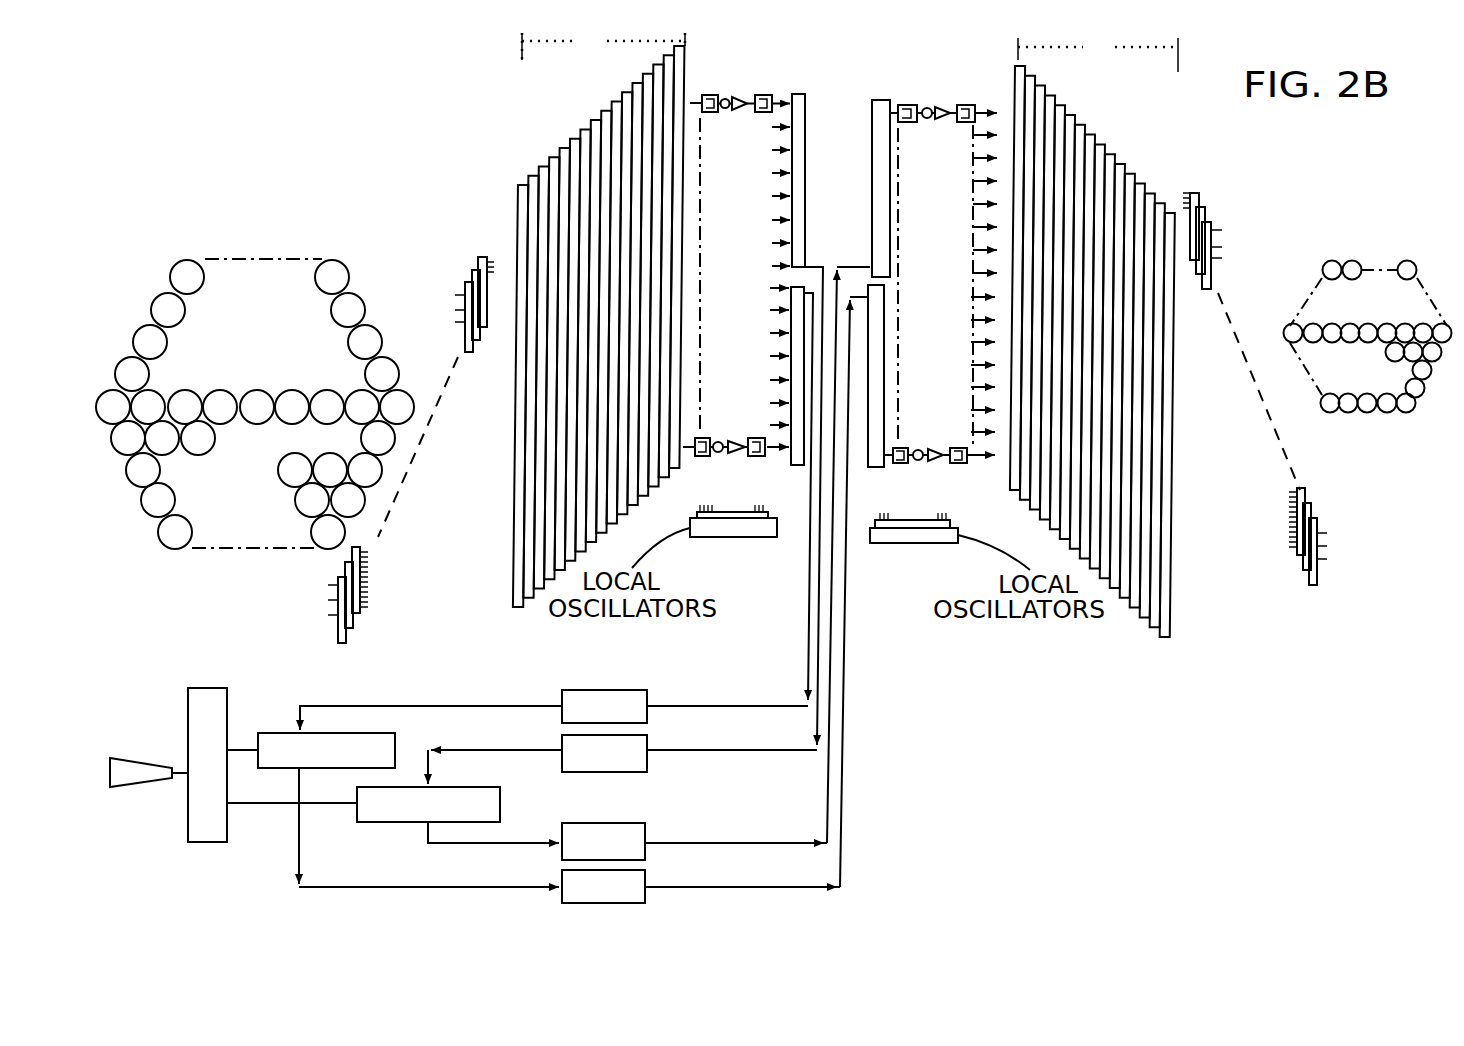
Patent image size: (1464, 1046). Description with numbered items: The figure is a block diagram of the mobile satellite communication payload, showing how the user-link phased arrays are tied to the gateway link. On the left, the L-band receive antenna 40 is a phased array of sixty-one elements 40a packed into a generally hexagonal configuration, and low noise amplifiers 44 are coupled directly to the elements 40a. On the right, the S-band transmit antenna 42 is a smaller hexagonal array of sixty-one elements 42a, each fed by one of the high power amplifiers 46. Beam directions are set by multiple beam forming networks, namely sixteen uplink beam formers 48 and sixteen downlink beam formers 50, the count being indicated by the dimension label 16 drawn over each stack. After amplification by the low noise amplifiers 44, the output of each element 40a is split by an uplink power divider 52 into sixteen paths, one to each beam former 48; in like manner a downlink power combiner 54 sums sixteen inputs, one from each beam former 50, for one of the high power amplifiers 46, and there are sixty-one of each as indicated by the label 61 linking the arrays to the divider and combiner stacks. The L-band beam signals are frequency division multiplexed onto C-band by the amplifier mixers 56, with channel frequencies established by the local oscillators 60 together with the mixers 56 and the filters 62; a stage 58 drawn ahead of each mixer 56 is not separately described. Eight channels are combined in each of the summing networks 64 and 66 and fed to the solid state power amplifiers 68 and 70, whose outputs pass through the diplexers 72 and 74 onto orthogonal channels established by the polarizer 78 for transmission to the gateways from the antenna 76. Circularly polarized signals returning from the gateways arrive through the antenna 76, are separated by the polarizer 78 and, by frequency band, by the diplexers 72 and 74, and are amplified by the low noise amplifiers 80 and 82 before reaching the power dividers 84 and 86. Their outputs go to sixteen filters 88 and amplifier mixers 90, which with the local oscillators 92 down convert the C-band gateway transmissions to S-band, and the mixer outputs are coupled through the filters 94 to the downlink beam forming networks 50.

The beam former count label 16 is at (850, 49).
The L-band receive antenna 40 is at (252, 238).
The receive antenna element 40a is at (362, 294).
The S-band transmit antenna 42 is at (1389, 218).
The transmit antenna element 42a is at (1405, 413).
The low noise amplifiers 44 is at (175, 549).
The high power amplifiers 46 is at (1350, 260).
The uplink beam forming networks 48 is at (636, 47).
The downlink beam forming networks 50 is at (1042, 53).
The uplink power divider 52 is at (497, 340).
The downlink power combiner 54 is at (1193, 338).
The amplifier mixers 56 is at (719, 462).
The filter 58 is at (700, 458).
The local oscillators 60 is at (731, 540).
The element count label 61 is at (839, 365).
The filters 62 is at (760, 458).
The summing network 64 is at (808, 152).
The summing network 66 is at (806, 289).
The power amplifier 68 is at (648, 690).
The power amplifier 70 is at (647, 760).
The diplexer 72 is at (265, 733).
The diplexer 74 is at (383, 822).
The antenna 76 is at (126, 757).
The polarizer 78 is at (186, 820).
The low noise amplifier 80 is at (645, 826).
The low noise amplifier 82 is at (645, 872).
The power divider 84 is at (872, 100).
The power divider 86 is at (878, 468).
The filters 88 is at (907, 105).
The amplifier mixers 90 is at (918, 463).
The local oscillators 92 is at (912, 545).
The filters 94 is at (967, 105).